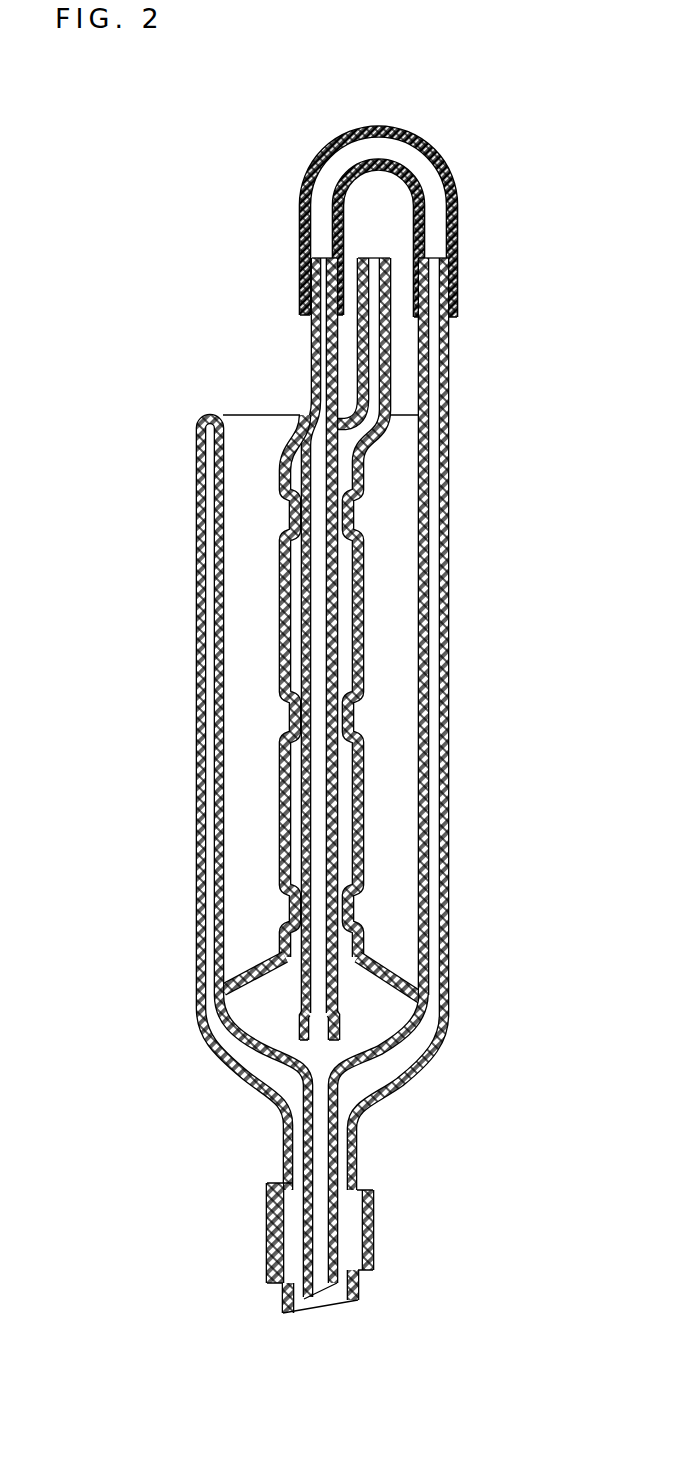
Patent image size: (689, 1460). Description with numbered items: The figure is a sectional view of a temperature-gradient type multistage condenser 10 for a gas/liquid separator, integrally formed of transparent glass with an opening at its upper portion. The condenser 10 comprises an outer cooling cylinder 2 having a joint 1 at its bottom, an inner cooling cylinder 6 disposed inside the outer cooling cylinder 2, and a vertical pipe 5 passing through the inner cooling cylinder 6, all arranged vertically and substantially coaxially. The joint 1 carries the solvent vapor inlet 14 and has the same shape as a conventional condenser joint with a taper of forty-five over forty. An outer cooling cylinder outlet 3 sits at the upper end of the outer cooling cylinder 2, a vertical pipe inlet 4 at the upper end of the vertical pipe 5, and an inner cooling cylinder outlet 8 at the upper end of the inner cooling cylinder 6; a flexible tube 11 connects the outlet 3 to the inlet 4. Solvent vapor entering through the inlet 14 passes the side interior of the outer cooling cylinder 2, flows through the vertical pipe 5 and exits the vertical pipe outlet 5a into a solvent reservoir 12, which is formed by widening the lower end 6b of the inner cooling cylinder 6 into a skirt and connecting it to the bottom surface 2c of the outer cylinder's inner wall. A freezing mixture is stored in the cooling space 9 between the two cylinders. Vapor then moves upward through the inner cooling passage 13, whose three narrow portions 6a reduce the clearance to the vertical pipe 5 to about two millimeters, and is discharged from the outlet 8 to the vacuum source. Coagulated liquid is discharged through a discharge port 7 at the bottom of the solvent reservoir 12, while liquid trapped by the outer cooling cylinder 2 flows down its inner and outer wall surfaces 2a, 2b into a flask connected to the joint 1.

The joint 1 is at (370, 1267).
The outer cooling cylinder 2 is at (447, 592).
The inner wall surface of the outer cooling cylinder 2a is at (428, 633).
The outer wall surface of the outer cooling cylinder 2b is at (448, 672).
The bottom surface of the inner wall of the outer cooling cylinder 2c is at (405, 1070).
The outer cooling cylinder outlet 3 is at (447, 355).
The vertical pipe inlet 4 is at (305, 355).
The vertical pipe 5 is at (303, 602).
The vertical pipe outlet 5a is at (317, 1030).
The inner cooling cylinder 6 is at (282, 787).
The narrow portions 6a is at (297, 520).
The lower end of the inner cooling cylinder 6b is at (380, 970).
The discharge port 7 is at (333, 1260).
The inner cooling cylinder outlet 8 is at (380, 257).
The cooling space 9 is at (392, 550).
The condenser 10 is at (243, 243).
The flexible tube 11 is at (430, 149).
The solvent reservoir 12 is at (257, 1013).
The inner cooling passage 13 is at (290, 650).
The solvent vapor inlet 14 is at (340, 1287).